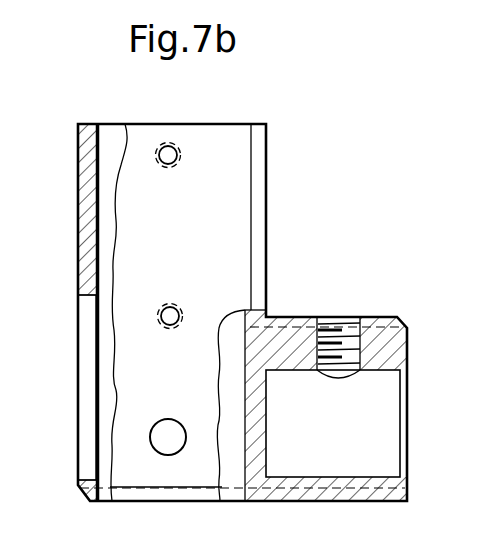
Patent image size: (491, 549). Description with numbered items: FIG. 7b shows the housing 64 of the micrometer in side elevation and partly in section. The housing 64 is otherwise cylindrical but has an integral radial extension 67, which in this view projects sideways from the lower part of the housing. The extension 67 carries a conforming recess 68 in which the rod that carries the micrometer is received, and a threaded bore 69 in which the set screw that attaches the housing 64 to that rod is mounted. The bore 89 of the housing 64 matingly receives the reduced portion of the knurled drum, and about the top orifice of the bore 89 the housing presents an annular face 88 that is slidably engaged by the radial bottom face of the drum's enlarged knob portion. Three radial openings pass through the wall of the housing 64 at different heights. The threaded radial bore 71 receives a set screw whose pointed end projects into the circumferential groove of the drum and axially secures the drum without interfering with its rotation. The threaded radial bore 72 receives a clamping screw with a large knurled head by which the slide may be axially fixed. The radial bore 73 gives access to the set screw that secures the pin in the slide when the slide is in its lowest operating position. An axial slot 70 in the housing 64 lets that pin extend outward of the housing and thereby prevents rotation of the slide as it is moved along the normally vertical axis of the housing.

The housing 64 is at (70, 258).
The integral radial extension 67 is at (380, 333).
The conforming recess 68 is at (368, 415).
The threaded bore 69 is at (346, 334).
The axial slot 70 is at (92, 366).
The threaded radial bore 71 is at (177, 155).
The threaded radial bore 72 is at (170, 312).
The radial bore 73 is at (168, 432).
The annular face 88 is at (88, 123).
The bore 89 is at (100, 151).